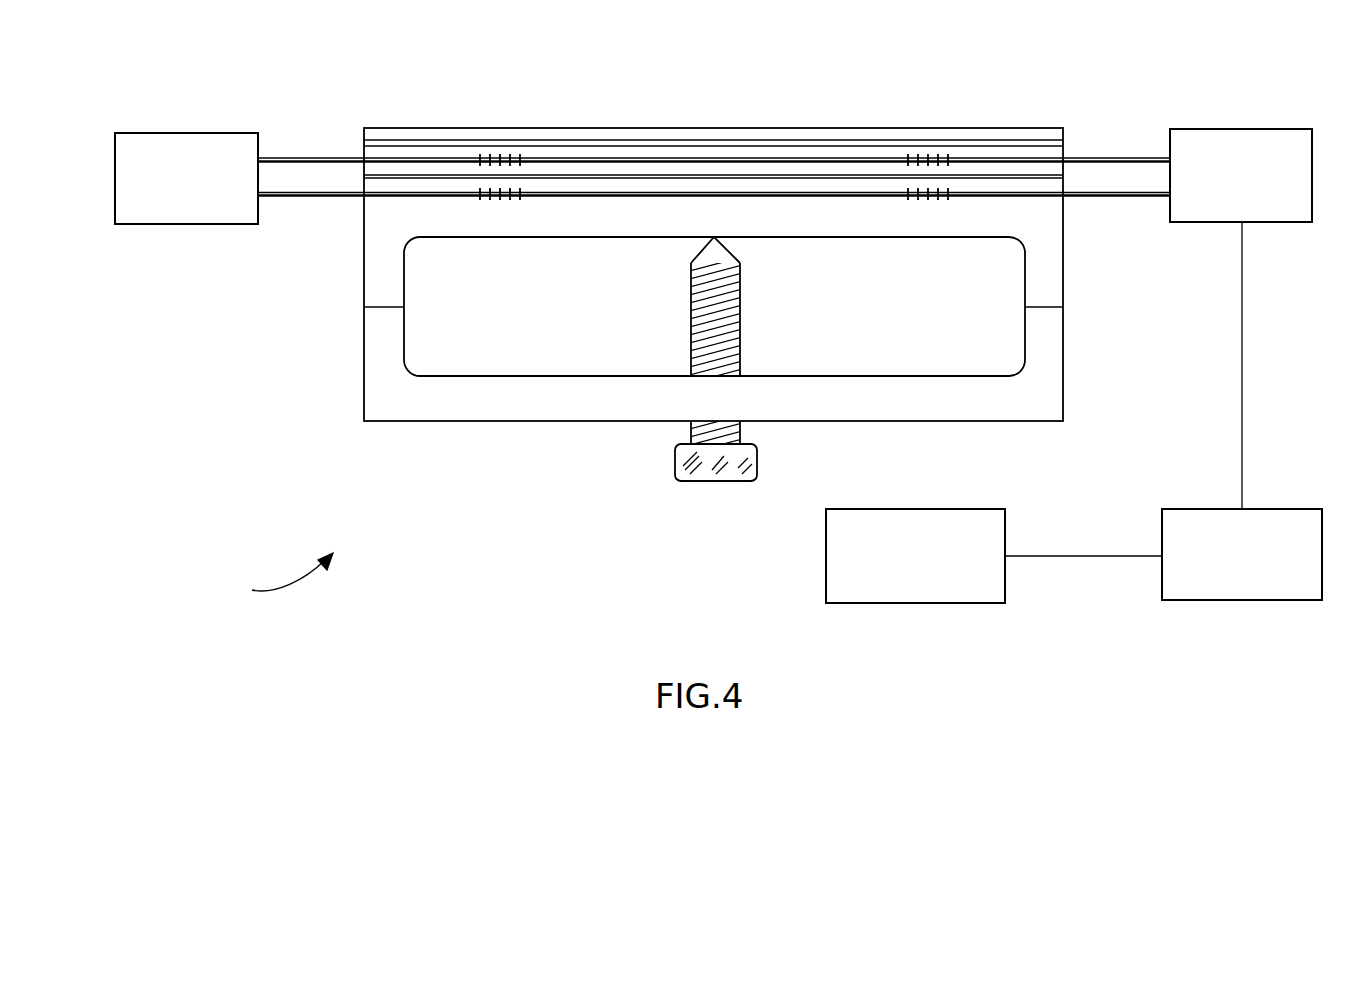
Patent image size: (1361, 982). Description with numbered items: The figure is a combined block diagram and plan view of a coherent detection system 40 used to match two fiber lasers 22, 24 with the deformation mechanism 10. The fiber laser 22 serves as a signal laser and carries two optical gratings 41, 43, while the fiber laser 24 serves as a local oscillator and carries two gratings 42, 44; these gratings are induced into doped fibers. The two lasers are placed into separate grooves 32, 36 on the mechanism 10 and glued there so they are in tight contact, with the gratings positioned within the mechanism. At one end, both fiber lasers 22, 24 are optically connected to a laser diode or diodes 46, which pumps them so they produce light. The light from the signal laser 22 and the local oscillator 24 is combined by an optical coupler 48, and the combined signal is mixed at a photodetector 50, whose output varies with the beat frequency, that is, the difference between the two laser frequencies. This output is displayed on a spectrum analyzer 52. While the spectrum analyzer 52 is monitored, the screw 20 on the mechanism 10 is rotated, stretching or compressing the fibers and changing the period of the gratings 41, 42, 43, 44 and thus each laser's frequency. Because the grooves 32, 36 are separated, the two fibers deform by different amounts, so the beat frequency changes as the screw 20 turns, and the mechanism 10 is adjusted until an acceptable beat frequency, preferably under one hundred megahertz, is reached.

The mechanism 10 is at (383, 421).
The screw 20 is at (676, 456).
The fiber laser 22 is at (327, 158).
The fiber laser 24 is at (305, 199).
The groove 32 is at (458, 157).
The groove 36 is at (400, 199).
The coherent detection system 40 is at (275, 576).
The optical grating 41 is at (910, 157).
The optical grating 42 is at (520, 195).
The optical grating 43 is at (523, 156).
The optical grating 44 is at (910, 193).
The laser diode 46 is at (172, 226).
The optical coupler 48 is at (1233, 129).
The photodetector 50 is at (1243, 600).
The spectrum analyzer 52 is at (826, 567).